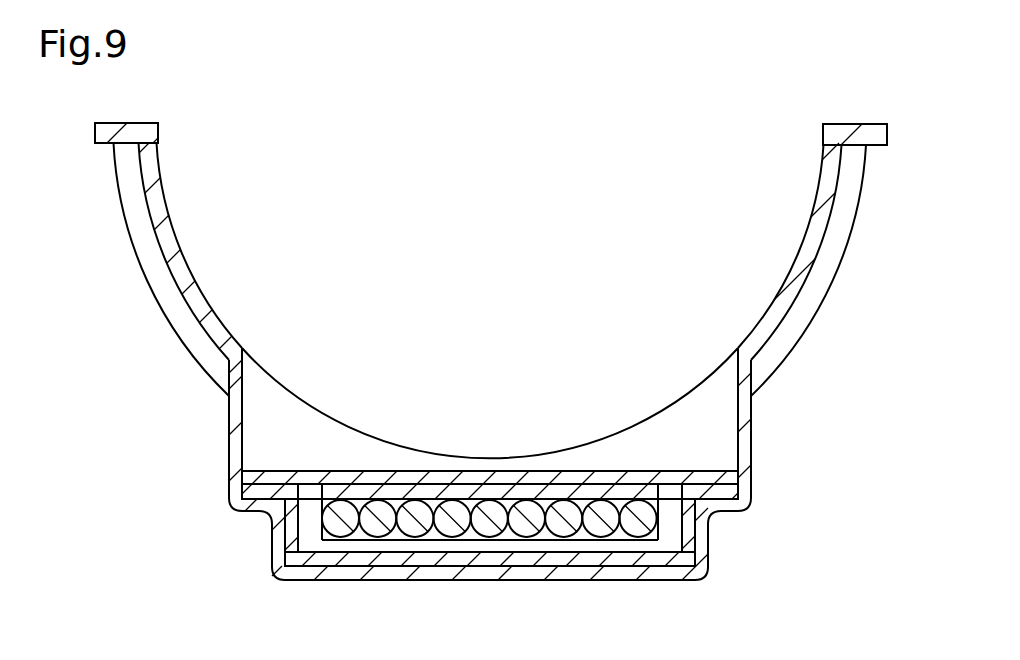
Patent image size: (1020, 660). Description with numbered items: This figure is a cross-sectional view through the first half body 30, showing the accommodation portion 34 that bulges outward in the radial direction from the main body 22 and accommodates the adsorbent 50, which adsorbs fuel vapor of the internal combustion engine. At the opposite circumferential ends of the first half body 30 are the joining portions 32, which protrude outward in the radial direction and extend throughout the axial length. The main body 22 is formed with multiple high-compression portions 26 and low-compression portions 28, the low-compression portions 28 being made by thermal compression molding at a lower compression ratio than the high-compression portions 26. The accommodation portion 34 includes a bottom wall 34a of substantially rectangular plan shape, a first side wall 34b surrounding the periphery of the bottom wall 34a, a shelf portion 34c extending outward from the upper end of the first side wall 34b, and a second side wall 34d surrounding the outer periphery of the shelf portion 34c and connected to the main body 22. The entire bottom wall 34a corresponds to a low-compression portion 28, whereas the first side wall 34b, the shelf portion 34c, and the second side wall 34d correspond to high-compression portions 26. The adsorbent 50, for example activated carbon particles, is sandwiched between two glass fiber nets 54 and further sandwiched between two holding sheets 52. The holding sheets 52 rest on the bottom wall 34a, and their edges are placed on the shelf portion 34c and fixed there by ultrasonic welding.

The main body 22 is at (472, 391).
The high-compression portion 26 is at (170, 282).
The low-compression portion 28 is at (123, 230).
The first half body 30 is at (112, 456).
The joining portion 32 is at (127, 123).
The accommodation portion 34 is at (443, 384).
The bottom wall 34a is at (498, 582).
The first side wall 34b is at (270, 545).
The shelf portion 34c is at (252, 515).
The second side wall 34d is at (229, 441).
The adsorbent 50 is at (645, 542).
The holding sheet 52 is at (338, 471).
The glass fiber net 54 is at (683, 553).